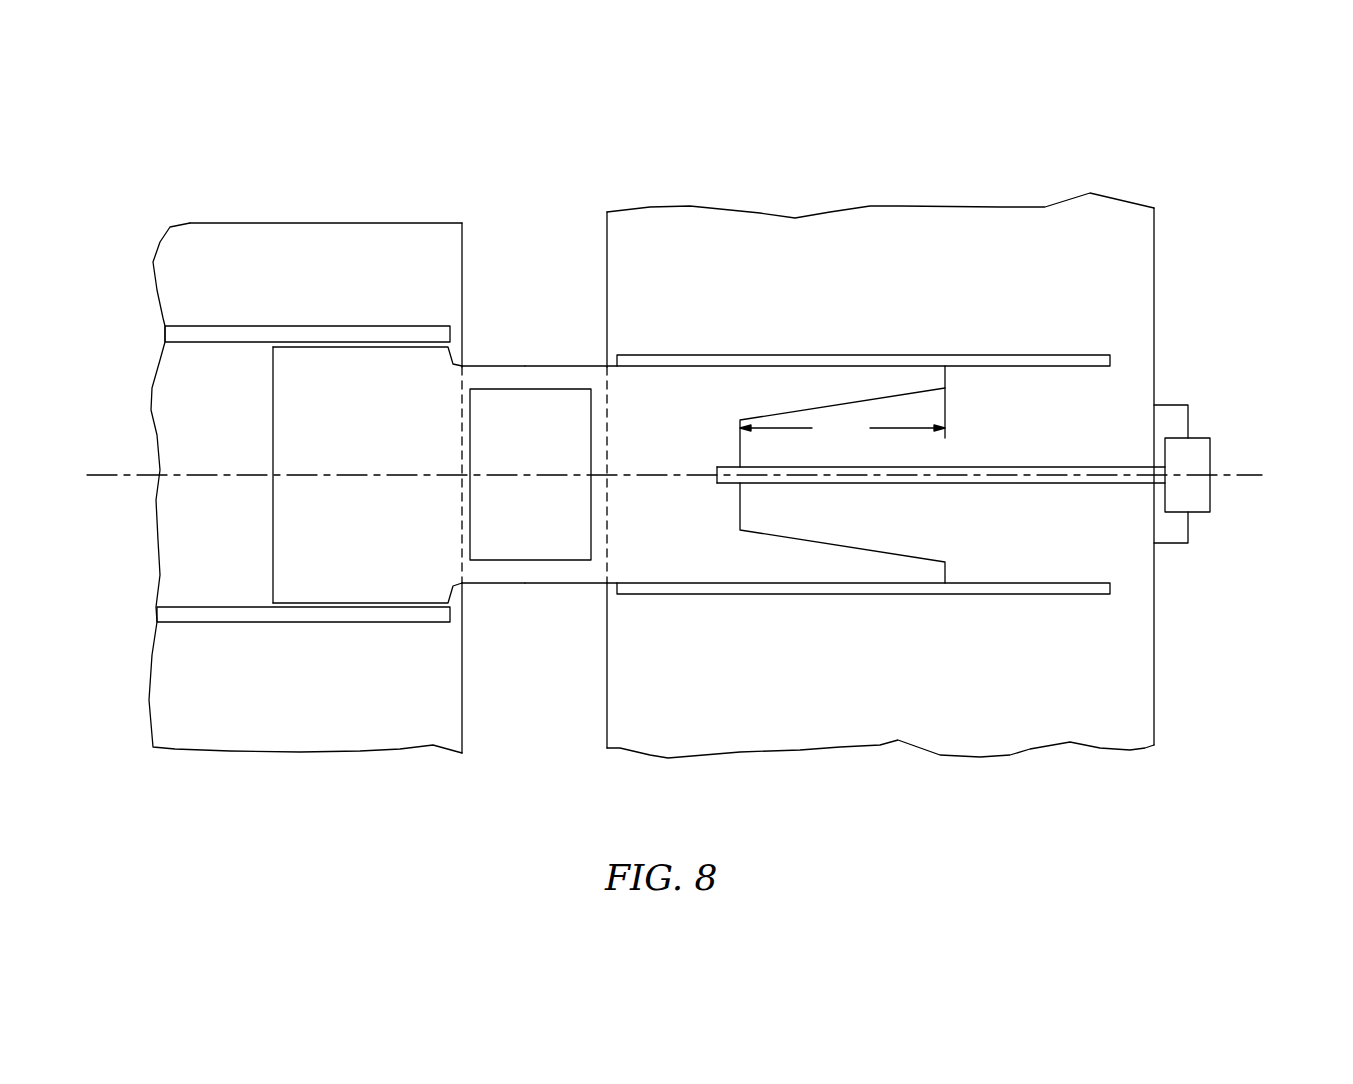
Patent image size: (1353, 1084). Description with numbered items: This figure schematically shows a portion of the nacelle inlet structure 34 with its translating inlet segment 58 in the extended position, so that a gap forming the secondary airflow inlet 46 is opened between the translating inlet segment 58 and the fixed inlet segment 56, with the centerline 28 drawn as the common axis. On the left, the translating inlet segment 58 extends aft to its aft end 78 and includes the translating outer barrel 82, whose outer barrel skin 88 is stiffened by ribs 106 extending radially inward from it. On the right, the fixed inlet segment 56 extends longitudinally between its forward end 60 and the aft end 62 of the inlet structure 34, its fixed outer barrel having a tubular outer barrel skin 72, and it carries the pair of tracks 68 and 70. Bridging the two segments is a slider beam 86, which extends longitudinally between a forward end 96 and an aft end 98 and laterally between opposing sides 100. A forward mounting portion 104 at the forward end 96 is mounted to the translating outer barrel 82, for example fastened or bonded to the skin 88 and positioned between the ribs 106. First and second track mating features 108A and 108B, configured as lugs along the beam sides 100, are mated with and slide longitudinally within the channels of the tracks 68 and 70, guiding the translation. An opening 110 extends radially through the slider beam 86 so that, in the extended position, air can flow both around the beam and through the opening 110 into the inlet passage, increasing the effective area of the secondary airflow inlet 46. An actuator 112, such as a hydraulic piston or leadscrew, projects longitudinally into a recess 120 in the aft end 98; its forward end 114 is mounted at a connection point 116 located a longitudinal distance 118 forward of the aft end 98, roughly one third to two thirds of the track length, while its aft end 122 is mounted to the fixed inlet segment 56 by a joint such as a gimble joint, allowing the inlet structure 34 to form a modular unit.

The centerline 28 is at (97, 480).
The inlet structure 34 is at (304, 476).
The secondary airflow inlet 46 is at (528, 218).
The fixed inlet segment 56 is at (895, 195).
The translating inlet segment 58 is at (254, 213).
The forward end 60 is at (607, 232).
The aft end 62 is at (1155, 233).
The track 68 is at (683, 355).
The track 70 is at (685, 595).
The outer barrel skin 72 is at (751, 753).
The aft end 78 is at (462, 245).
The translating outer barrel 82 is at (288, 532).
The outer barrel skin 88 is at (175, 750).
The slider beam 86 is at (262, 518).
The forward end 96 is at (273, 455).
The aft end 98 is at (947, 375).
The opposing sides 100 is at (557, 365).
The forward mounting portion 104 is at (364, 617).
The ribs 106 is at (214, 325).
The first track mating feature 108A is at (485, 365).
The second track mating feature 108B is at (483, 585).
The opening 110 is at (555, 525).
The actuator 112 is at (1051, 497).
The forward end 114 is at (702, 465).
The connection point 116 is at (720, 503).
The longitudinal distance 118 is at (842, 414).
The recess 120 is at (916, 531).
The aft end 122 is at (1212, 447).